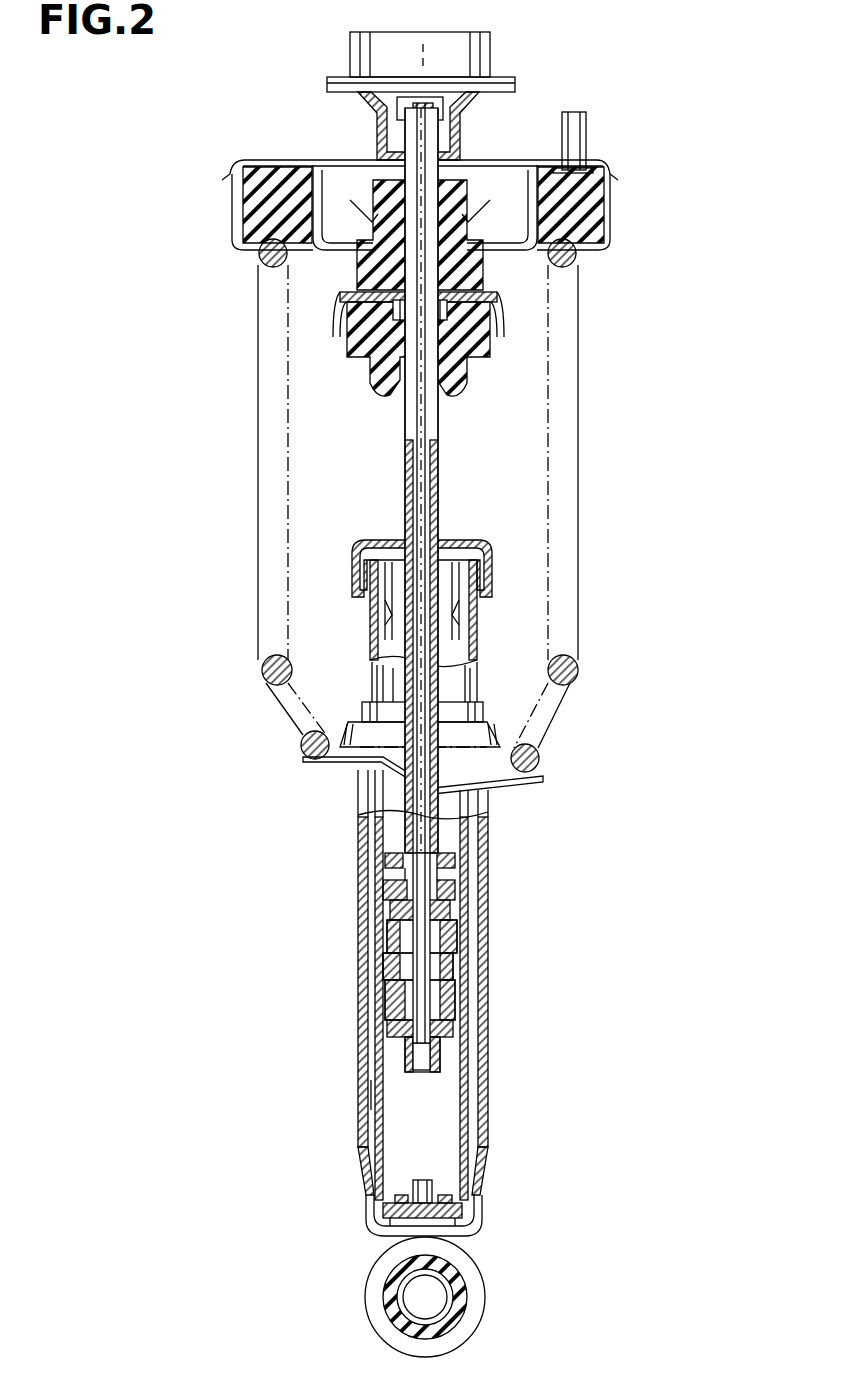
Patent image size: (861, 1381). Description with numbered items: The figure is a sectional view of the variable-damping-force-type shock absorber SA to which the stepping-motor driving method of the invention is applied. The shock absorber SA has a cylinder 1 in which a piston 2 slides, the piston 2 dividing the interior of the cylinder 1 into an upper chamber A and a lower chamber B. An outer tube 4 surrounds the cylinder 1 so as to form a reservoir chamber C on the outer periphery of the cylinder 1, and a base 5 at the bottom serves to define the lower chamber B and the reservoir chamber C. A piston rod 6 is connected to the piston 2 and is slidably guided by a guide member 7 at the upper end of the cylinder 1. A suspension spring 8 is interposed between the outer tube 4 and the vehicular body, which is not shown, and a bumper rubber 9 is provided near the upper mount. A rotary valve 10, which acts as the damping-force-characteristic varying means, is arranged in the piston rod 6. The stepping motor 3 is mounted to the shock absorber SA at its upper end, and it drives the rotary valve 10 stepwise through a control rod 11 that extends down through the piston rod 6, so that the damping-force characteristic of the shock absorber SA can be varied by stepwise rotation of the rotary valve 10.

The variable-damping-force-type shock absorber SA is at (315, 118).
The cylinder 1 is at (470, 1080).
The piston 2 is at (462, 990).
The stepping motor 3 is at (492, 52).
The outer tube 4 is at (360, 978).
The base 5 is at (480, 1205).
The piston rod 6 is at (405, 456).
The guide member 7 is at (470, 580).
The suspension spring 8 is at (586, 672).
The bumper rubber 9 is at (496, 365).
The rotary valve 10 is at (447, 930).
The control rod 11 is at (420, 470).
The upper chamber A is at (450, 834).
The lower chamber B is at (450, 1160).
The reservoir chamber C is at (373, 1098).